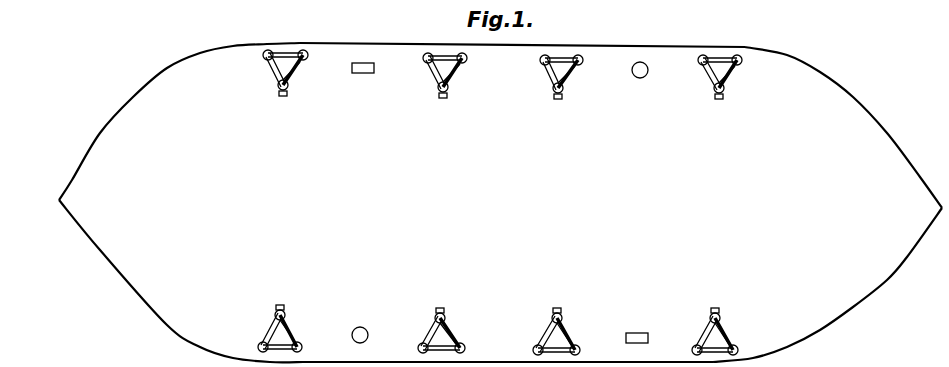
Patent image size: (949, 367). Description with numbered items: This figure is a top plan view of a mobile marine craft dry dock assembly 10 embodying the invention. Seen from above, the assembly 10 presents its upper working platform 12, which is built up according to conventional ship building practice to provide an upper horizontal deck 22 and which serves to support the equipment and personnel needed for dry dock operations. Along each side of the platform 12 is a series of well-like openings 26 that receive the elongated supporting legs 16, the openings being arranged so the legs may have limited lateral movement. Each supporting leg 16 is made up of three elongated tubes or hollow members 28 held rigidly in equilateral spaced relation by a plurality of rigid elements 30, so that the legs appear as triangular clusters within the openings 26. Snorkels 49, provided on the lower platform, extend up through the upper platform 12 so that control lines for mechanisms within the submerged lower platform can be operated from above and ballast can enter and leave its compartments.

The mobile marine craft dry dock assembly 10 is at (504, 201).
The upper working platform 12 is at (163, 328).
The supporting legs 16 is at (278, 32).
The upper horizontal deck 22 is at (867, 277).
The well-like openings 26 is at (288, 83).
The hollow members 28 is at (280, 84).
The rigid elements 30 is at (298, 69).
The snorkels 49 is at (643, 62).